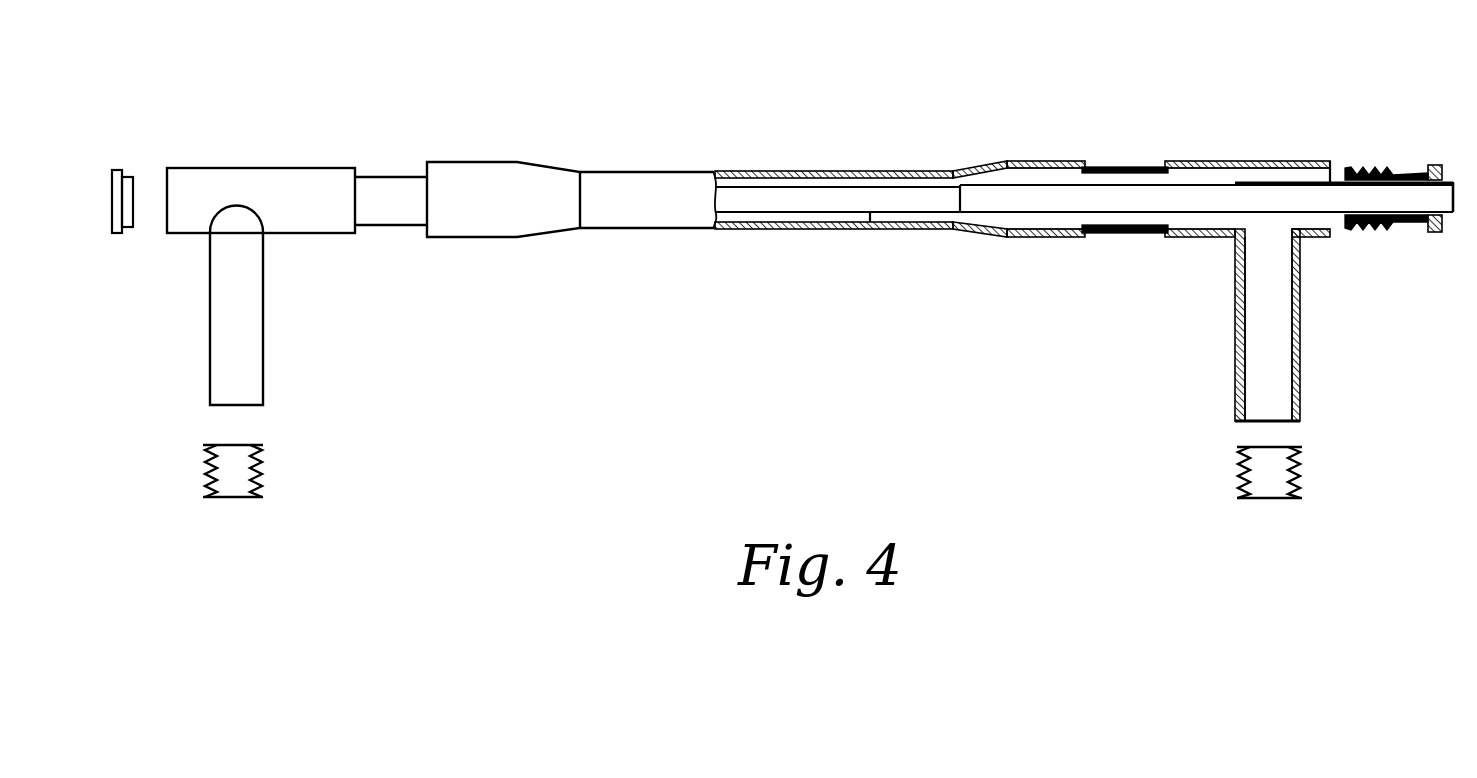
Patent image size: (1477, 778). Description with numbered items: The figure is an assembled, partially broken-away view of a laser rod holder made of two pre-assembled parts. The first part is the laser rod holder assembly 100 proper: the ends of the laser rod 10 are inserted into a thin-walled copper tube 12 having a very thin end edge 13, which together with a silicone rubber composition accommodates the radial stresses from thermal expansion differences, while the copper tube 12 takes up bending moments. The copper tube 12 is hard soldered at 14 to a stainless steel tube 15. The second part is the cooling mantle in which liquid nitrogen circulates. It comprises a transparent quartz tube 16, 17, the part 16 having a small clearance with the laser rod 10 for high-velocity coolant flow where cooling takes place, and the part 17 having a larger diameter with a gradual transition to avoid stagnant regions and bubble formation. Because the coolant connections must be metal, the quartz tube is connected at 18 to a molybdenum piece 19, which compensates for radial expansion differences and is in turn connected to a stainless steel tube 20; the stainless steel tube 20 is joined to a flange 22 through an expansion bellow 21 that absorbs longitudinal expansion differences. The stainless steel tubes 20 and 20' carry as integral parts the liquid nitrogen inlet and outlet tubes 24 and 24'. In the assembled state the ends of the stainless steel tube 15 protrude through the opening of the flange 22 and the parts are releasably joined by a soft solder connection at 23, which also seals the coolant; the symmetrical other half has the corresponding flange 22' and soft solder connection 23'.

The laser rod holder assembly 100 is at (821, 84).
The laser rod 10 is at (870, 223).
The copper tube 12 is at (1073, 216).
The end edge 13 is at (957, 229).
The hard solder connection 14 is at (1178, 218).
The stainless steel tube 15 is at (1233, 218).
The quartz tube part 16 is at (760, 229).
The quartz tube part 17 is at (1037, 162).
The connection 18 is at (1080, 168).
The molybdenum piece 19 is at (1127, 170).
The stainless steel tube 20 is at (1247, 156).
The expansion bellow 21 is at (1389, 168).
The flange 22 is at (1418, 154).
The soft solder connection 23 is at (1450, 159).
The liquid nitrogen inlet/outlet tube 24 is at (1308, 329).
The stainless steel tube 20' is at (440, 172).
The flange 22' is at (169, 161).
The soft solder connection 23' is at (119, 158).
The liquid nitrogen inlet/outlet tube 24' is at (196, 306).